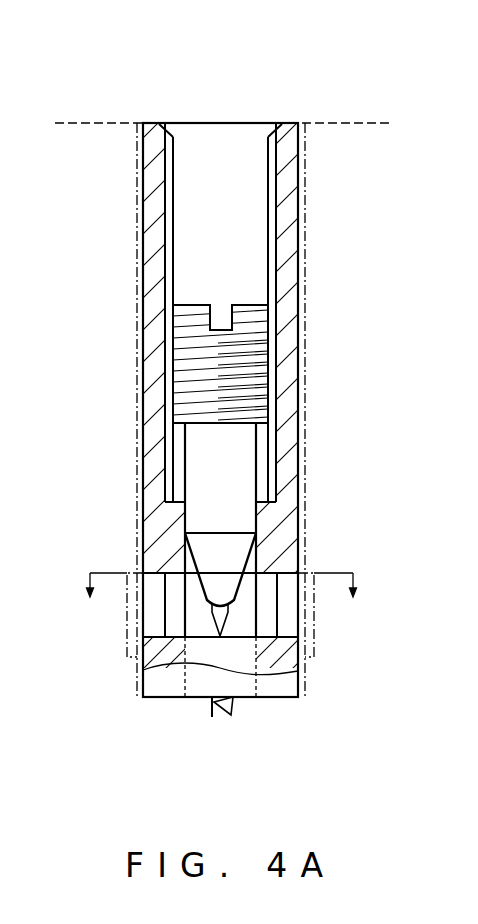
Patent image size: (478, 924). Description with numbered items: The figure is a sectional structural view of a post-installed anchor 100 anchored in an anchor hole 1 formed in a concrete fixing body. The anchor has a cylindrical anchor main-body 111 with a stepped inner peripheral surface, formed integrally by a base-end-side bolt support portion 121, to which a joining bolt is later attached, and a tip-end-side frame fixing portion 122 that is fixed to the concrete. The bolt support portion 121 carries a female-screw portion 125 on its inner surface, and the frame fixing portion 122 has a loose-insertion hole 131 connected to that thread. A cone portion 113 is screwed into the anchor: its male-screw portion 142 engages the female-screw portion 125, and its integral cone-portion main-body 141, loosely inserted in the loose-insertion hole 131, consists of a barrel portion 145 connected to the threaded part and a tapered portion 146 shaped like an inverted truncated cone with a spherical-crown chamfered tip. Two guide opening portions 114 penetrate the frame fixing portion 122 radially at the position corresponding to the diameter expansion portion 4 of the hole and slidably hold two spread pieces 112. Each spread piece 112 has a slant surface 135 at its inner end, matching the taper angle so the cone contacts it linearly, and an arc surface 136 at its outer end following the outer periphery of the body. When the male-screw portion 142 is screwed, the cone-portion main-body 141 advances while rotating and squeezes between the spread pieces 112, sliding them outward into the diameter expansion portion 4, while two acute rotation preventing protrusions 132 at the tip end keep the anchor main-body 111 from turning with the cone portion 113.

The post-installed anchor 100 is at (222, 66).
The anchor main-body 111 is at (308, 194).
The bolt support portion 121 is at (143, 233).
The female-screw portion 125 is at (267, 167).
The anchor hole 1 is at (128, 282).
The male-screw portion 142 is at (223, 305).
The cone-portion main-body 141 is at (238, 504).
The frame fixing portion 122 is at (178, 476).
The cone portion 113 is at (270, 441).
The barrel portion 145 is at (205, 465).
The tapered portion 146 is at (208, 545).
The slant surface 135 is at (228, 612).
The guide opening portion 114 is at (155, 577).
The loose-insertion hole 131 is at (257, 543).
The arc surface 136 is at (143, 597).
The spread piece 112 is at (157, 627).
The rotation preventing protrusion 132 is at (212, 717).
The diameter expansion portion 4 is at (133, 570).